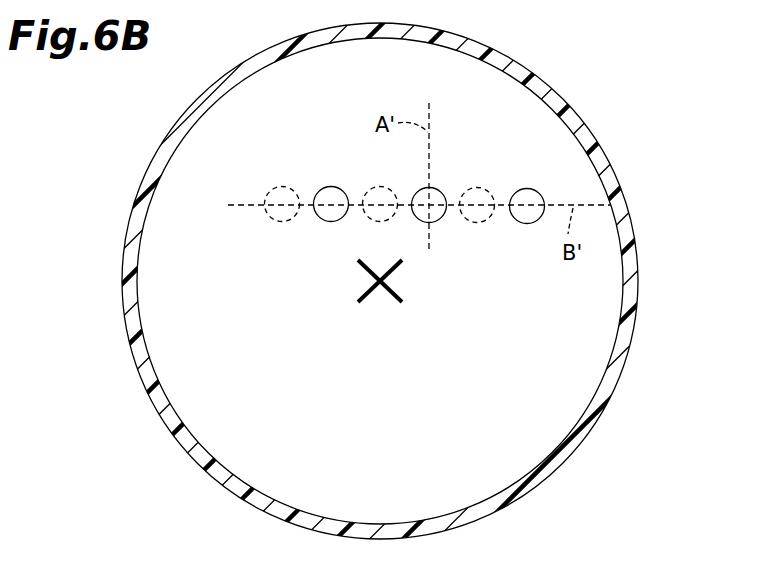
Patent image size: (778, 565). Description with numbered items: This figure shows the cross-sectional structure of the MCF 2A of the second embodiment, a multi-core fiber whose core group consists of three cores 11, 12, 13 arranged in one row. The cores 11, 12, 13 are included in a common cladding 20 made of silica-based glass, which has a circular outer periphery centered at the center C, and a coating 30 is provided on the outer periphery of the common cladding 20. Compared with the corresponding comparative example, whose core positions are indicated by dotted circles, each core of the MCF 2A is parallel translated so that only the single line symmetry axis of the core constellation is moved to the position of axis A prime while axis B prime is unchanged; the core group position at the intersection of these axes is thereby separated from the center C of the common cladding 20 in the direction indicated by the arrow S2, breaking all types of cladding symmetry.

The MCF 2A is at (389, 282).
The core 11 is at (328, 186).
The core 12 is at (441, 192).
The core 13 is at (527, 188).
The common cladding 20 is at (593, 348).
The coating 30 is at (593, 410).
The arrow S2 is at (305, 170).
The center C is at (377, 284).